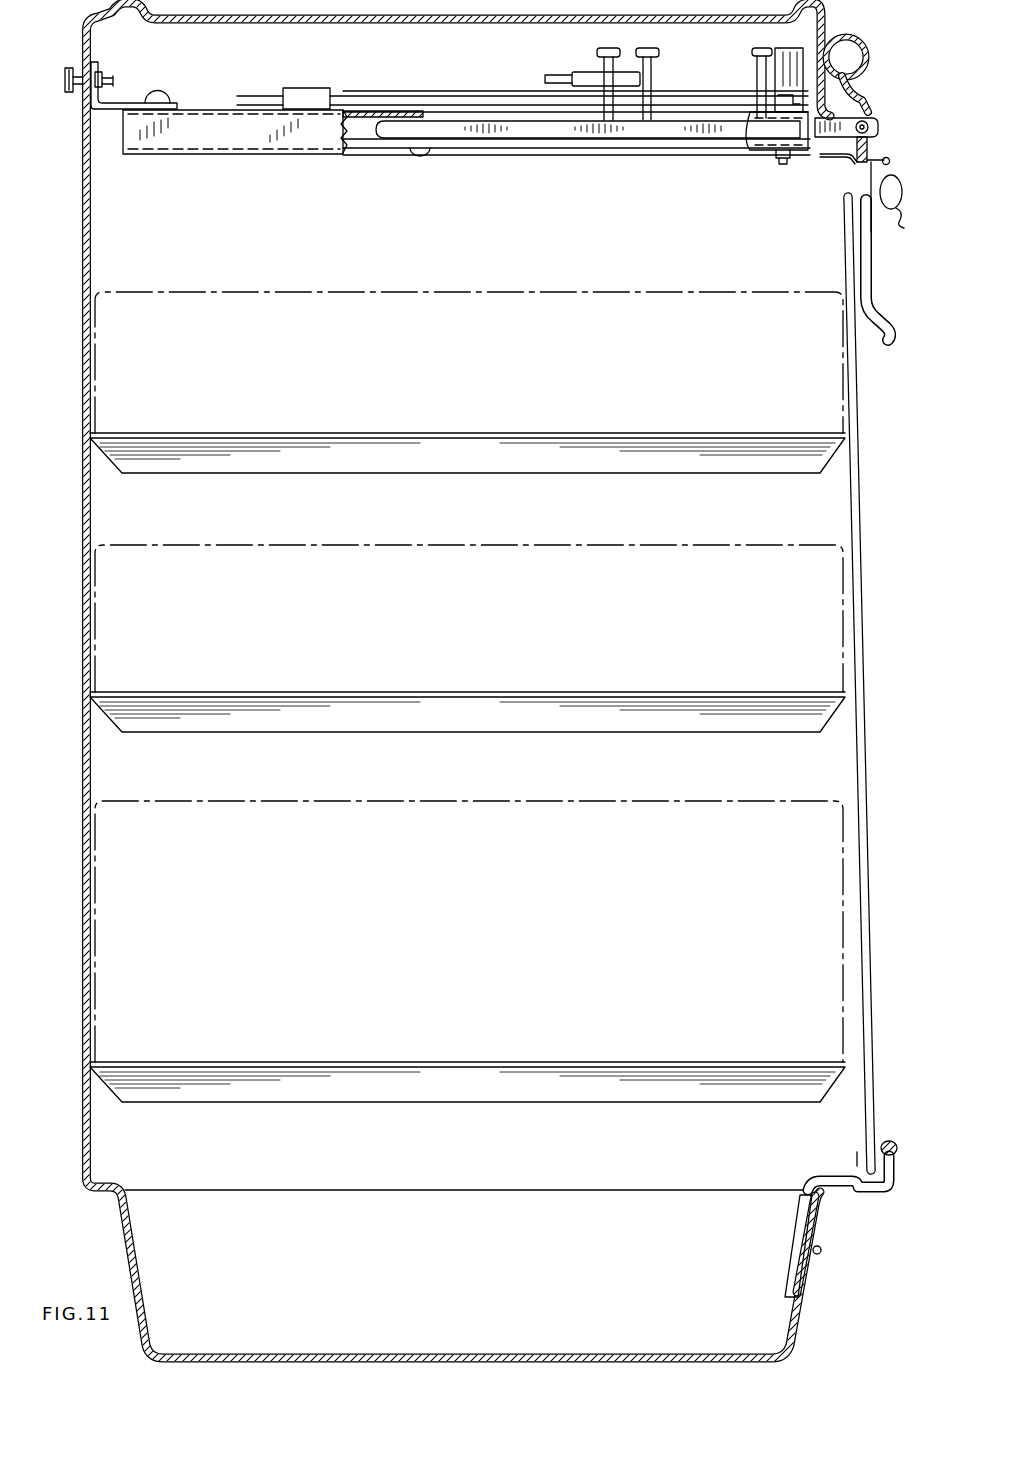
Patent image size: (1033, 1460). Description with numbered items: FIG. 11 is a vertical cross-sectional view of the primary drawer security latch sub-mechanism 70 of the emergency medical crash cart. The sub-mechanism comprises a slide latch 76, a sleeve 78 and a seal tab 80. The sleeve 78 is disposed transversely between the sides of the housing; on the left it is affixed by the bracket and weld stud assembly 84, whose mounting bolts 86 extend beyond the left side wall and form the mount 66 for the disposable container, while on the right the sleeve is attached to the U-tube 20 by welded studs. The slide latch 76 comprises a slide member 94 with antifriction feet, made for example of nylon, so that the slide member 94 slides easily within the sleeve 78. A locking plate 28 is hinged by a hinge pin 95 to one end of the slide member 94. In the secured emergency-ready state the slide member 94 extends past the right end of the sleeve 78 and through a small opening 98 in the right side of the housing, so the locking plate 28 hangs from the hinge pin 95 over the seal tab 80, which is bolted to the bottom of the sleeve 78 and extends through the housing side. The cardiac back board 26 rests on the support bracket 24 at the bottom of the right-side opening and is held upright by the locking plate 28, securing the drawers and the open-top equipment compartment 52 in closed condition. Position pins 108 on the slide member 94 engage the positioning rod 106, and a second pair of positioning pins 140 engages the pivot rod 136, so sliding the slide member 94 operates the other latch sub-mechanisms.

The U-tube 20 is at (880, 30).
The back board support bracket 24 is at (812, 1185).
The cardiac back board 26 is at (848, 506).
The locking plate 28 is at (866, 248).
The open-top equipment compartment 52 is at (130, 1250).
The mount 66 is at (68, 66).
The drawer security latch sub-mechanism 70 is at (720, 162).
The slide latch 76 is at (637, 130).
The sleeve 78 is at (246, 140).
The seal tab 80 is at (855, 164).
The bracket and weld stud assembly 84 is at (120, 97).
The mounting bolts 86 is at (104, 72).
The slide member 94 is at (558, 132).
The hinge pin 95 is at (855, 135).
The small opening 98 is at (868, 110).
The positioning rod 106 is at (420, 95).
The position pins 108 is at (755, 50).
The pivot rod 136 is at (560, 78).
The second pair of positioning pins 140 is at (647, 47).